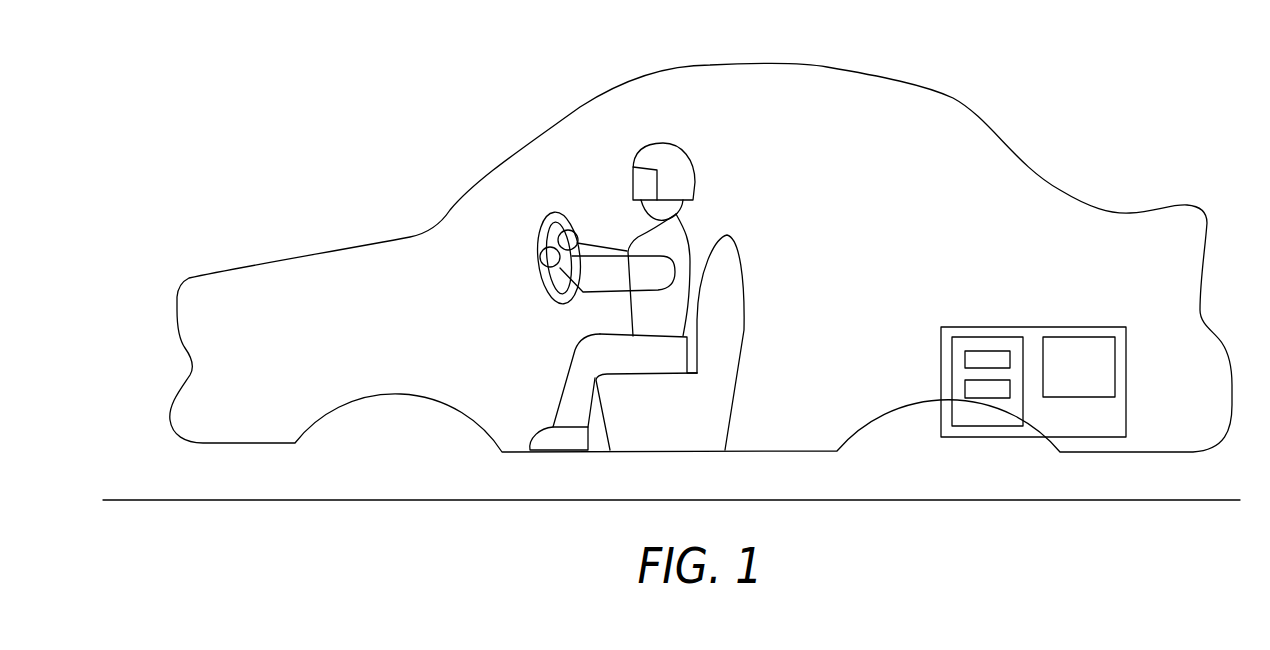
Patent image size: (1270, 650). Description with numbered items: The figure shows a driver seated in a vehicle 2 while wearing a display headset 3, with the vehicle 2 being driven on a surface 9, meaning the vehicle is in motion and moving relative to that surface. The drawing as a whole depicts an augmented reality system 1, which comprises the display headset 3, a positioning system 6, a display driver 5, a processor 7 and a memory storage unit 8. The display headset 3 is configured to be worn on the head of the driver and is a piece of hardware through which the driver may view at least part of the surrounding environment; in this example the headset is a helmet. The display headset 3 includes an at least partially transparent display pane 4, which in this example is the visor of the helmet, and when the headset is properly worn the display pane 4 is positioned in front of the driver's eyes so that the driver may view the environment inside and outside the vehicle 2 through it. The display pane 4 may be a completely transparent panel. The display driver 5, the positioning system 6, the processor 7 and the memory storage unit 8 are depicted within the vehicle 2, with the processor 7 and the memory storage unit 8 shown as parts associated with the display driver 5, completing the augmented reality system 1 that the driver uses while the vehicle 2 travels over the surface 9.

The augmented reality system 1 is at (614, 118).
The vehicle 2 is at (950, 93).
The display headset 3 is at (678, 143).
The display pane 4 is at (627, 185).
The display driver 5 is at (1003, 337).
The positioning system 6 is at (1097, 337).
The processor 7 is at (965, 357).
The memory storage unit 8 is at (965, 387).
The surface 9 is at (135, 500).